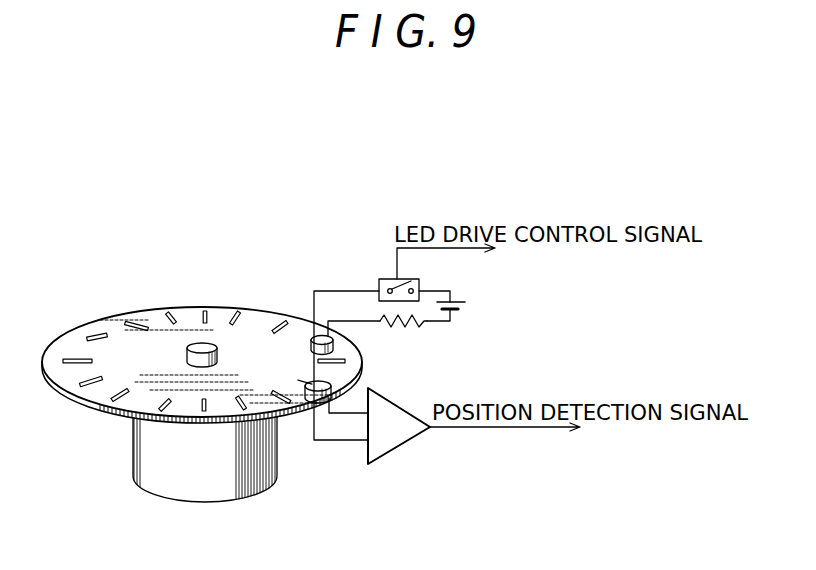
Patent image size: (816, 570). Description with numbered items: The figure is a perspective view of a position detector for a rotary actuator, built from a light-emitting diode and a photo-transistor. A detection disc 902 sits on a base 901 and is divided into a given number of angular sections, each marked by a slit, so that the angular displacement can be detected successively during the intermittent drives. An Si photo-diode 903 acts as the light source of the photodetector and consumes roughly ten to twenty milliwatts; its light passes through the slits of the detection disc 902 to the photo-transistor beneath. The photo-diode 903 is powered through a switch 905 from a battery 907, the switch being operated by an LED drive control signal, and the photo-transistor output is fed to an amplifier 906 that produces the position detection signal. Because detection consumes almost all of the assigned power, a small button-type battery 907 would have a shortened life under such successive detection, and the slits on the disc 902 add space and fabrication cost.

The base / motor housing 901 is at (145, 460).
The detection disc 902 is at (95, 323).
The Si photo-diode 903 is at (333, 337).
The switch 905 is at (420, 283).
The amplifier 906 is at (393, 455).
The battery / power source 907 is at (465, 310).